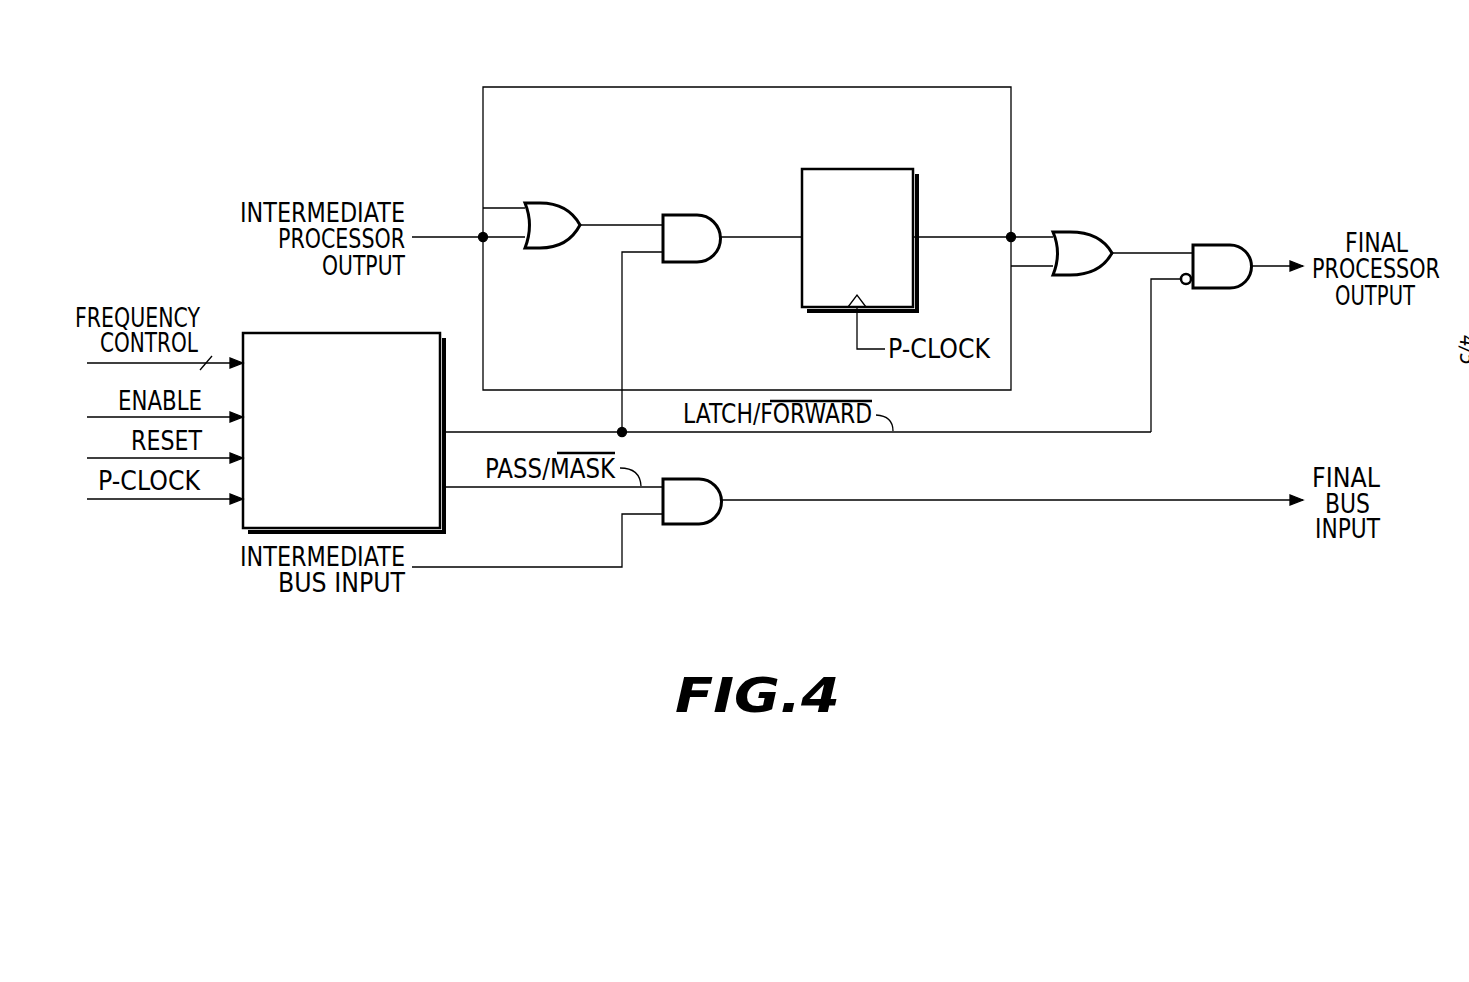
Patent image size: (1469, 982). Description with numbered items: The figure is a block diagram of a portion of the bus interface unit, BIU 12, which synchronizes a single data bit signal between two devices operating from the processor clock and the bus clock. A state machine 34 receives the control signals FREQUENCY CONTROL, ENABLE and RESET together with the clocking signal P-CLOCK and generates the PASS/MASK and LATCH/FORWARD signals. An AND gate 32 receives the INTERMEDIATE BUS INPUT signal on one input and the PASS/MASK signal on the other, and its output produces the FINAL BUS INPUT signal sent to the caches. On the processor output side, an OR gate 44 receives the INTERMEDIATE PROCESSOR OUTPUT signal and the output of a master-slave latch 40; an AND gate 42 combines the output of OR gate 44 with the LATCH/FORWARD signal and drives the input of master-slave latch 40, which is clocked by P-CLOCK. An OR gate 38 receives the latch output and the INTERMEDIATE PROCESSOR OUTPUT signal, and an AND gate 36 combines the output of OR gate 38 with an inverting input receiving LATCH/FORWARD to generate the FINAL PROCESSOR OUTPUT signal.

The bus interface unit 12 is at (828, 637).
The AND gate 32 is at (700, 514).
The state machine 34 is at (426, 514).
The AND gate 36 is at (1233, 277).
The OR gate 38 is at (1091, 266).
The master-slave latch 40 is at (871, 280).
The AND gate 42 is at (702, 251).
The OR gate 44 is at (564, 236).